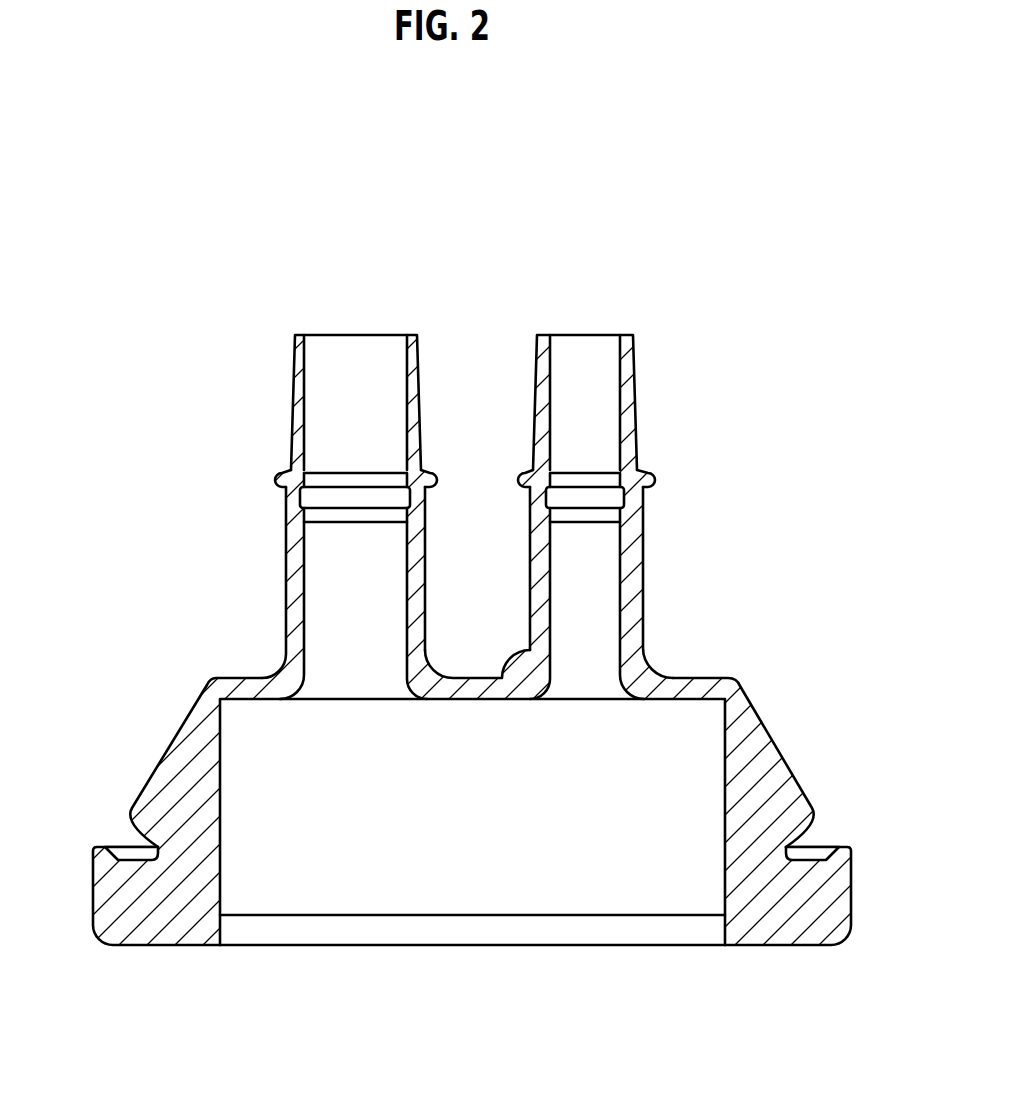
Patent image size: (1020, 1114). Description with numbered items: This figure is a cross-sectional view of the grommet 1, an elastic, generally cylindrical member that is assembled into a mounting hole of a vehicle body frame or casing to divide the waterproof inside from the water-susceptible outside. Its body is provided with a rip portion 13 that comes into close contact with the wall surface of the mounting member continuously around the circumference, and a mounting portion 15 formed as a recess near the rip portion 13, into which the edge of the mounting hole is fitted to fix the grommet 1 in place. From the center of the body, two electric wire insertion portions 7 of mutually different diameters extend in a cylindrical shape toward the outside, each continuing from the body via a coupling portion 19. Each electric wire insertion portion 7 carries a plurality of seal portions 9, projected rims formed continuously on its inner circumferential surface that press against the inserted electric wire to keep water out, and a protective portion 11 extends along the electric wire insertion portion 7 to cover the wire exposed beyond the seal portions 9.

The grommet 1 is at (508, 214).
The electric wire insertion portion 7 is at (283, 587).
The seal portion 9 is at (278, 479).
The protective portion 11 is at (291, 377).
The rip portion 13 is at (103, 846).
The mounting portion 15 is at (820, 848).
The coupling portion 19 is at (498, 700).